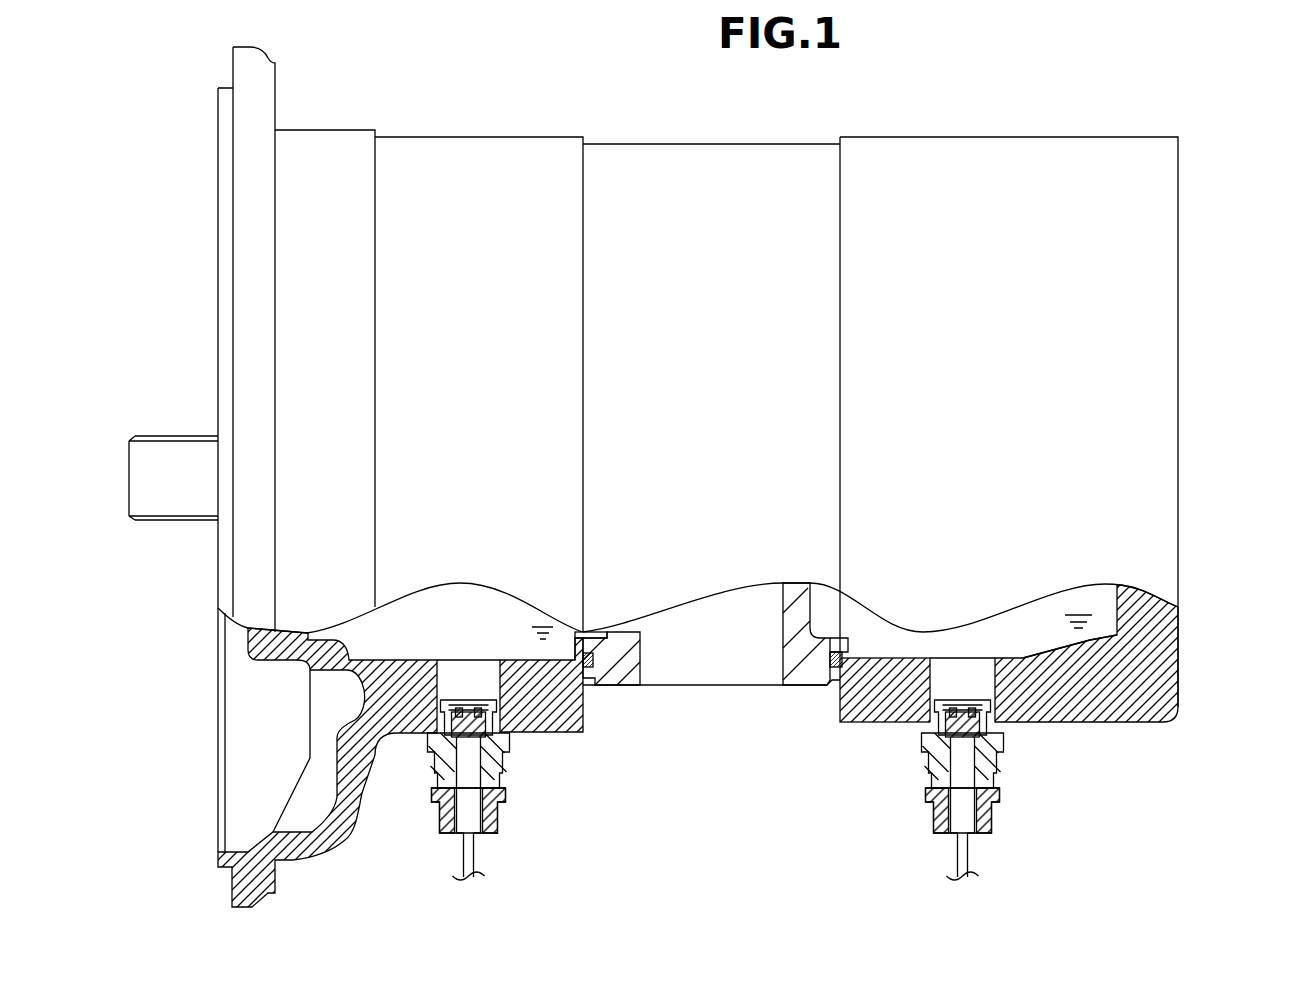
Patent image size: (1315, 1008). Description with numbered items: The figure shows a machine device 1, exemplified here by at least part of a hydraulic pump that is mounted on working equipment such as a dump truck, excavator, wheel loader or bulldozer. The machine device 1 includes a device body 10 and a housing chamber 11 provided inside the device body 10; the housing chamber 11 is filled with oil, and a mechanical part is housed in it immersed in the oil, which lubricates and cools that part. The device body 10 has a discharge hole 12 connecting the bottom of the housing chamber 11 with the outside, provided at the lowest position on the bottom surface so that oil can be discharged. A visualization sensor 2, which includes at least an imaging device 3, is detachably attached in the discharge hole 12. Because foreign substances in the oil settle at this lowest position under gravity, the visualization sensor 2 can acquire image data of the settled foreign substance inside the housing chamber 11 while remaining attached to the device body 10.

The machine device 1 is at (1262, 130).
The visualization sensor 2 is at (424, 776).
The imaging device 3 is at (470, 802).
The device body 10 is at (1160, 397).
The housing chamber 11 is at (582, 636).
The discharge hole 12 is at (495, 658).